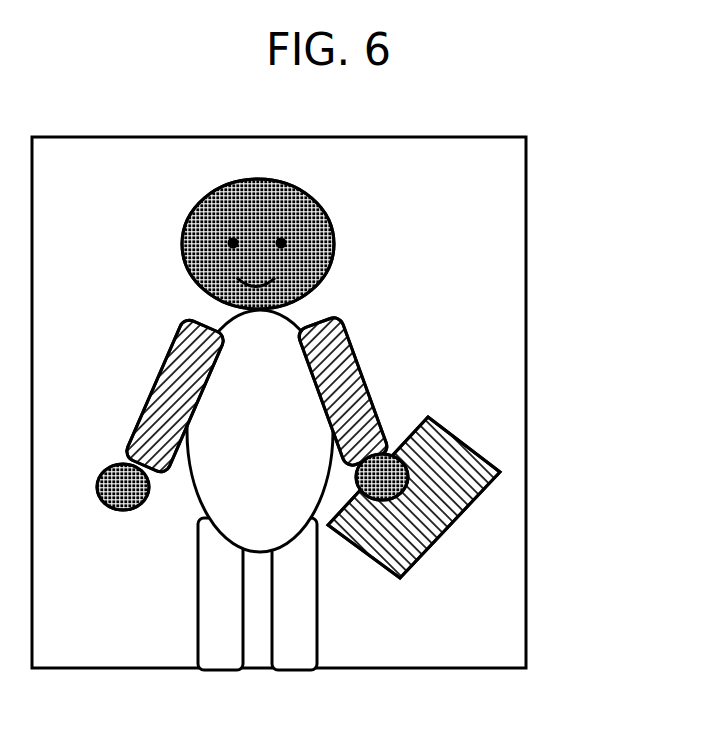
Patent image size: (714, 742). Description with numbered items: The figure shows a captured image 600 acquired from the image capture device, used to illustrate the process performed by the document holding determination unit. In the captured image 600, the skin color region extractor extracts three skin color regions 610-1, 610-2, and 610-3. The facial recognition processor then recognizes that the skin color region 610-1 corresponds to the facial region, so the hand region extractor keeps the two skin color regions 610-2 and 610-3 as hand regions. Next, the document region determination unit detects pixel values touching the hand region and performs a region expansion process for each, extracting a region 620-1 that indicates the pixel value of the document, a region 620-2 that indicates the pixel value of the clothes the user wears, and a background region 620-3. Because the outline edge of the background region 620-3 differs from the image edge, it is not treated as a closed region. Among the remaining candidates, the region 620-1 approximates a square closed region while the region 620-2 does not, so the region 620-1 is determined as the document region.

The captured image 600 is at (527, 176).
The skin color region 610-1 is at (293, 187).
The skin color region 610-2 is at (385, 460).
The skin color region 610-3 is at (121, 510).
The region that indicates the pixel value of the document 620-1 is at (487, 462).
The region that indicates the pixel value of the clothes 620-2 is at (357, 340).
The background region 620-3 is at (515, 610).